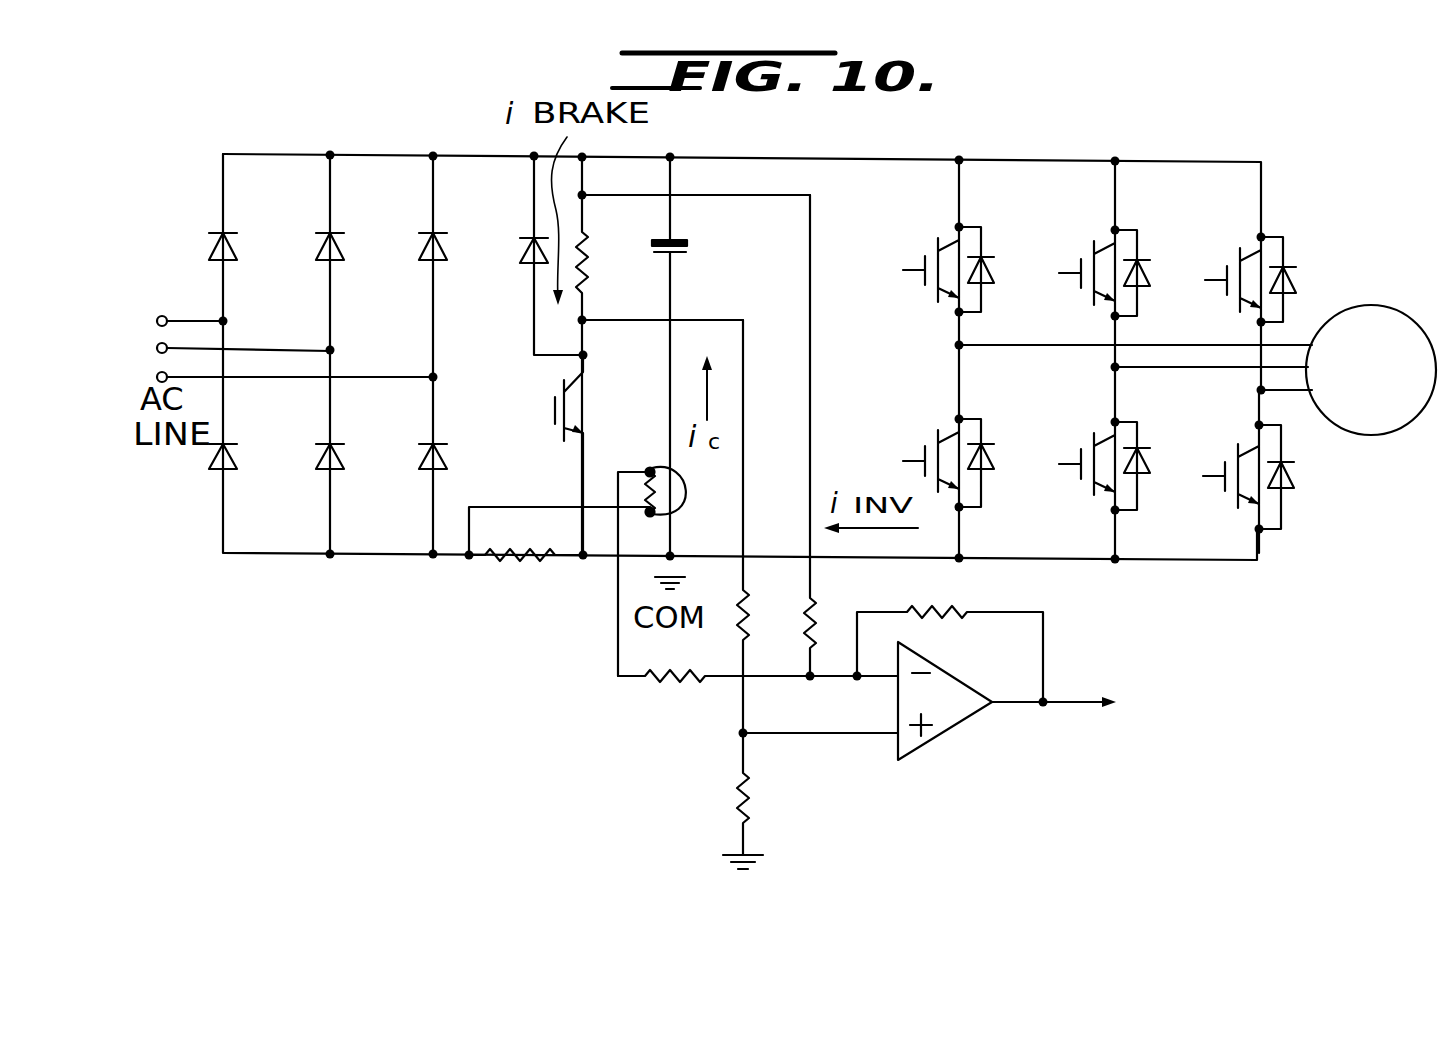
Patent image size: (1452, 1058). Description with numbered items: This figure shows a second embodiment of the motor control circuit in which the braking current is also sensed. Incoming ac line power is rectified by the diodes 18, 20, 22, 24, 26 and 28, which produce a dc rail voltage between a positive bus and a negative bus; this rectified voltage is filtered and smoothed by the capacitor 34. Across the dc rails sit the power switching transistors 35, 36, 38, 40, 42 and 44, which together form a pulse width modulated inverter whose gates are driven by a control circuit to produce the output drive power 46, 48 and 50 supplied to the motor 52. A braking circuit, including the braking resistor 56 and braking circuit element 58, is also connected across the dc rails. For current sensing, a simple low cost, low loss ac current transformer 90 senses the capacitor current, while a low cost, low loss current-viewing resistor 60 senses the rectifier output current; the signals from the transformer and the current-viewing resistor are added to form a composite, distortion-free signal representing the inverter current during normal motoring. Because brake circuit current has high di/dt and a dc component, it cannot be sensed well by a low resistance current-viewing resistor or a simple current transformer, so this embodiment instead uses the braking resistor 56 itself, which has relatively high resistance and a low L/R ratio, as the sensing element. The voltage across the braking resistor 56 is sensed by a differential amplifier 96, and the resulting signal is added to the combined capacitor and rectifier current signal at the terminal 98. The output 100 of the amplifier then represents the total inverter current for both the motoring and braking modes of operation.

The diode 18 is at (338, 250).
The diode 20 is at (318, 459).
The diode 22 is at (422, 247).
The diode 24 is at (422, 459).
The diode 26 is at (234, 240).
The diode 28 is at (214, 455).
The capacitor 34 is at (690, 249).
The power switching transistor 35 is at (966, 250).
The power switching transistor 36 is at (963, 481).
The power switching transistor 38 is at (1122, 256).
The power switching transistor 40 is at (1118, 490).
The power switching transistor 42 is at (1272, 260).
The power switching transistor 44 is at (1277, 496).
The output drive power 46 is at (1153, 351).
The output drive power 48 is at (1210, 370).
The output drive power 50 is at (1292, 394).
The motor 52 is at (1414, 423).
The braking resistor 56 is at (588, 262).
The braking circuit element 58 is at (522, 253).
The current-viewing resistor 60 is at (522, 560).
The ac current transformer 90 is at (658, 468).
The differential amplifier 96 is at (950, 730).
The terminal 98 is at (812, 682).
The output 100 is at (1068, 702).